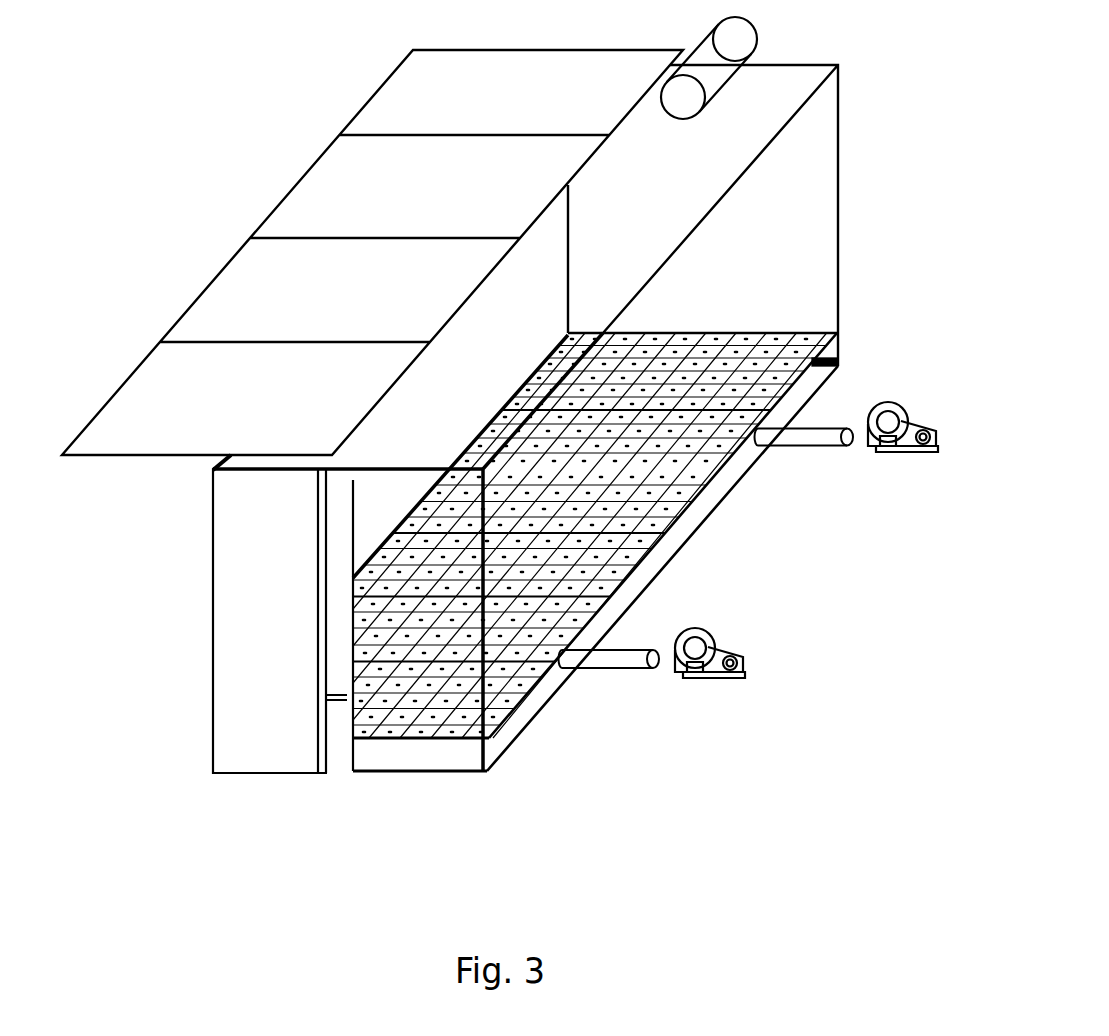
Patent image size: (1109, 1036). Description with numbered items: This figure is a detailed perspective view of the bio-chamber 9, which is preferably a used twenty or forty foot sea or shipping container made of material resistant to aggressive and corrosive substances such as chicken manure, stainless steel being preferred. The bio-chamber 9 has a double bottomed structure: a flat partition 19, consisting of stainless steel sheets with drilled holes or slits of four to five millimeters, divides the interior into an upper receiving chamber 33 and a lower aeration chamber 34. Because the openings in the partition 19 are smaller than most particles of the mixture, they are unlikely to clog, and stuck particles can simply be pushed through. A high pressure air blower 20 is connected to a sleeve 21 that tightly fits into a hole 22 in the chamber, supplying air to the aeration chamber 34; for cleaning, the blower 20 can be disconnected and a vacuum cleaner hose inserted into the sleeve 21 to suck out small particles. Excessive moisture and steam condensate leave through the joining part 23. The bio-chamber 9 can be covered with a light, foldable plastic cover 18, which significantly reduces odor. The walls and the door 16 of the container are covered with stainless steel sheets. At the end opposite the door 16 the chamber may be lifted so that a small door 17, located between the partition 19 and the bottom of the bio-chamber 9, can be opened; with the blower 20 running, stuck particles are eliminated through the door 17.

The bio-chamber 9 is at (212, 471).
The door 16 is at (230, 668).
The small door 17 is at (422, 757).
The light plastic cover 18 is at (330, 197).
The flat partition 19 is at (620, 552).
The high pressure air blower 20 is at (877, 447).
The sleeve 21 is at (810, 435).
The hole 22 is at (765, 448).
The joining part 23 is at (737, 48).
The receiving chamber 33 is at (803, 193).
The aeration chamber 34 is at (830, 353).